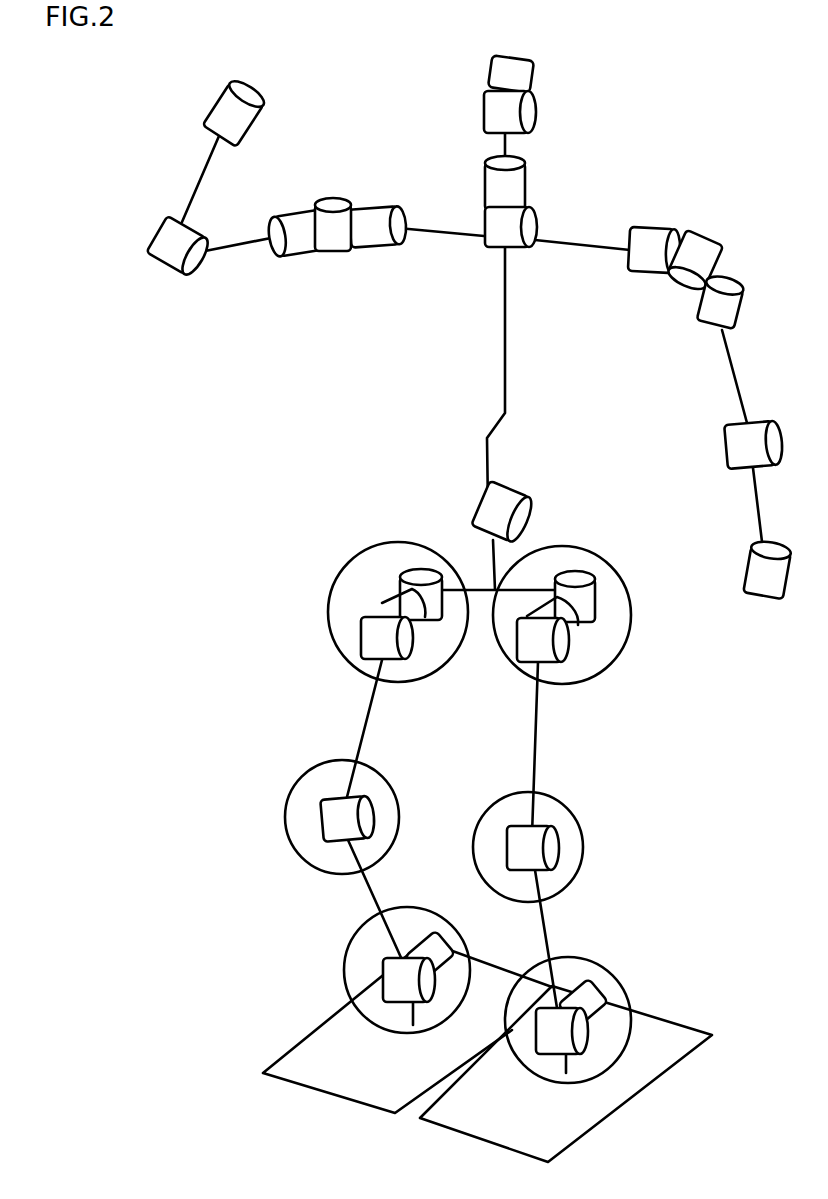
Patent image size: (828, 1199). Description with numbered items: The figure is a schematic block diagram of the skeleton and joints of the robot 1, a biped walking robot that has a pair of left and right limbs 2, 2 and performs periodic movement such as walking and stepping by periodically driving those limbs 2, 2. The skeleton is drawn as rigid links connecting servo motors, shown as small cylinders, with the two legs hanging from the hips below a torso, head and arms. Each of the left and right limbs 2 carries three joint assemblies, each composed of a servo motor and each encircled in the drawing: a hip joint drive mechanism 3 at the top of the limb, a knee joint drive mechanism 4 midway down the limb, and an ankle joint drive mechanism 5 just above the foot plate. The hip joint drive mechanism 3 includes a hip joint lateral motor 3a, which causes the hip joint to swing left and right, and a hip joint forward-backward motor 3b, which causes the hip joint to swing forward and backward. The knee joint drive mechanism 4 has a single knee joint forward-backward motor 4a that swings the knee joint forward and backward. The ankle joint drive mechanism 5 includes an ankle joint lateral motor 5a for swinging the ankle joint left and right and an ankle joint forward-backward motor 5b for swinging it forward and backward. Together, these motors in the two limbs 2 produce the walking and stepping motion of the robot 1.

The robot 1 is at (632, 108).
The limb 2 is at (364, 731).
The hip joint drive mechanism 3 is at (368, 545).
The hip joint lateral motor 3a is at (383, 597).
The hip joint forward-backward motor 3b is at (368, 637).
The knee joint drive mechanism 4 is at (290, 840).
The knee joint forward-backward motor 4a is at (320, 810).
The ankle joint drive mechanism 5 is at (347, 937).
The ankle joint lateral motor 5a is at (437, 933).
The ankle joint forward-backward motor 5b is at (385, 977).